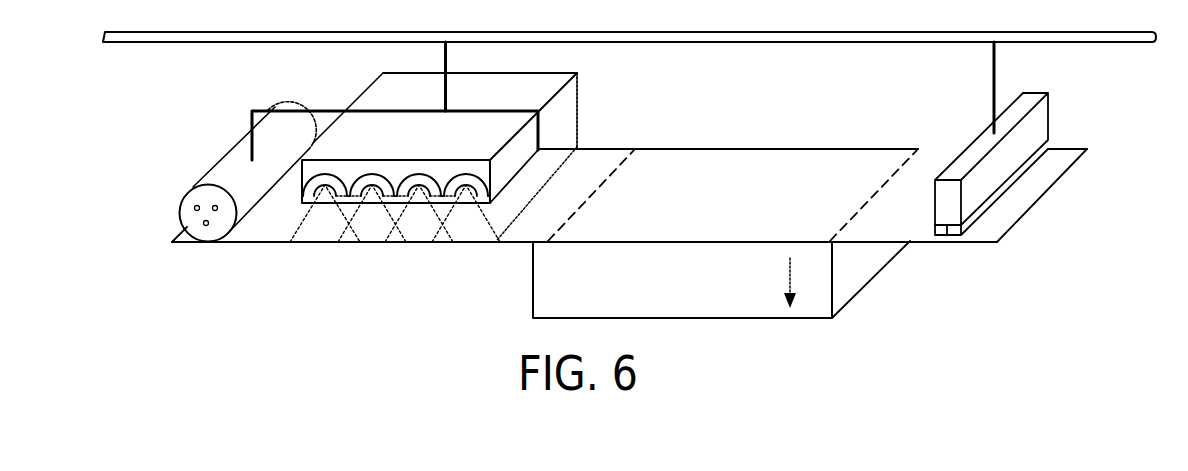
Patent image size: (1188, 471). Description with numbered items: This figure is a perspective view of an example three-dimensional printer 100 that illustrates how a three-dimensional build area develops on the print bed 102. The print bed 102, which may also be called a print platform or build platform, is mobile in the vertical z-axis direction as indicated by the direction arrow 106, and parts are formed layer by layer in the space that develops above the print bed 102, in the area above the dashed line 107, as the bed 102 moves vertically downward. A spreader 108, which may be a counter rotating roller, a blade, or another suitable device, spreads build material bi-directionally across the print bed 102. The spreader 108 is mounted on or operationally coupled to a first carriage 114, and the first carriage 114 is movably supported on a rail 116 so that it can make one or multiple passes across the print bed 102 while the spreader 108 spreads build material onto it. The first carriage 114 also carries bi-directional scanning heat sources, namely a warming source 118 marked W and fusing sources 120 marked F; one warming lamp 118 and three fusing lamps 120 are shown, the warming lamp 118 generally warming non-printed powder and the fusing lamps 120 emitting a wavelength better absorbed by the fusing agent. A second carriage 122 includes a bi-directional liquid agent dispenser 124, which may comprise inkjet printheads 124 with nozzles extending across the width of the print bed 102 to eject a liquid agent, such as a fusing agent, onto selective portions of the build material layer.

The 3D printer 100 is at (88, 91).
The print bed 102 is at (531, 267).
The direction arrow 106 is at (790, 271).
The dashed line 107 is at (858, 213).
The spreader 108 is at (192, 187).
The first carriage 114 is at (578, 95).
The rail 116 is at (678, 32).
The warming source 118 is at (341, 172).
The fusing source 120 is at (421, 172).
The second carriage 122 is at (1050, 97).
The liquid agent dispenser 124 is at (948, 241).